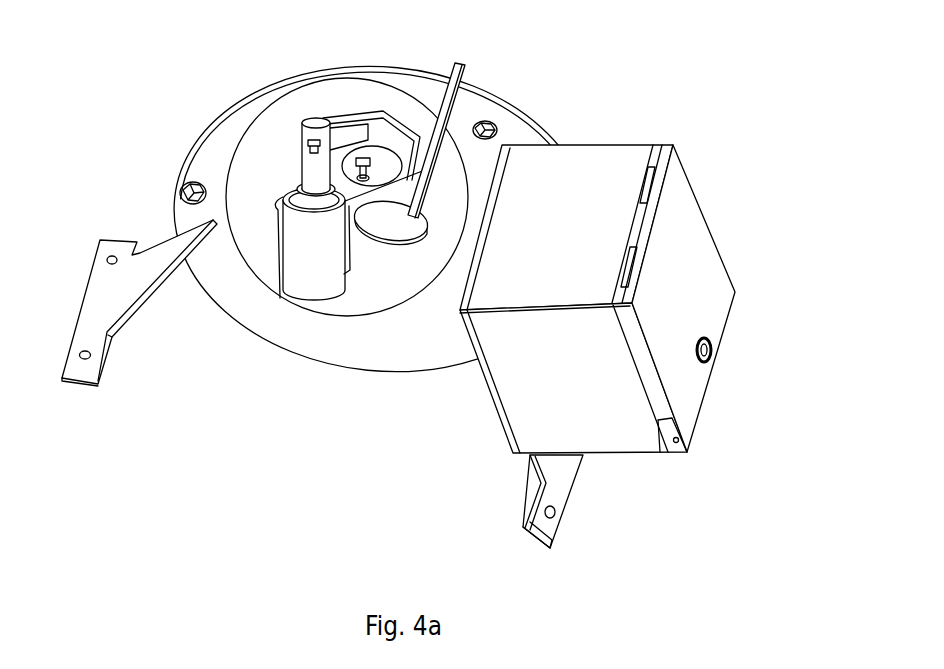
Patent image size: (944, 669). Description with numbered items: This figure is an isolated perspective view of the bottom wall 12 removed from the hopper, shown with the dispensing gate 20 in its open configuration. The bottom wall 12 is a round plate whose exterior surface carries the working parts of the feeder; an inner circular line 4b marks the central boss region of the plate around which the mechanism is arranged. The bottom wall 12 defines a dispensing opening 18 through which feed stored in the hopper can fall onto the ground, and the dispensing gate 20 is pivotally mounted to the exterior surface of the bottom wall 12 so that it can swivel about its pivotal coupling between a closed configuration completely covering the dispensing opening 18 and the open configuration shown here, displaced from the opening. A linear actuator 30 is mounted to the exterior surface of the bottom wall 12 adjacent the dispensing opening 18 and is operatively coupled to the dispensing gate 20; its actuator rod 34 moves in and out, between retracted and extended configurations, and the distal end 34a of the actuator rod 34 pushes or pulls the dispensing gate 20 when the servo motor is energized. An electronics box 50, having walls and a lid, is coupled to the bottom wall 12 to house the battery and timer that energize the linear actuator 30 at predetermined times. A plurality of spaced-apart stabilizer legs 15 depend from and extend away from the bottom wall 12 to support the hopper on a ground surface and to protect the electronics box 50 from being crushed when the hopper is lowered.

The bottom wall 12 is at (257, 95).
The inner circular boss of plate 4b is at (243, 133).
The stabilizer legs 15 is at (462, 75).
The dispensing opening 18 is at (387, 243).
The dispensing gate 20 is at (399, 100).
The linear actuator 30 is at (277, 313).
The actuator rod 34 is at (313, 167).
The distal end 34a is at (317, 125).
The electronics box 50 is at (687, 247).